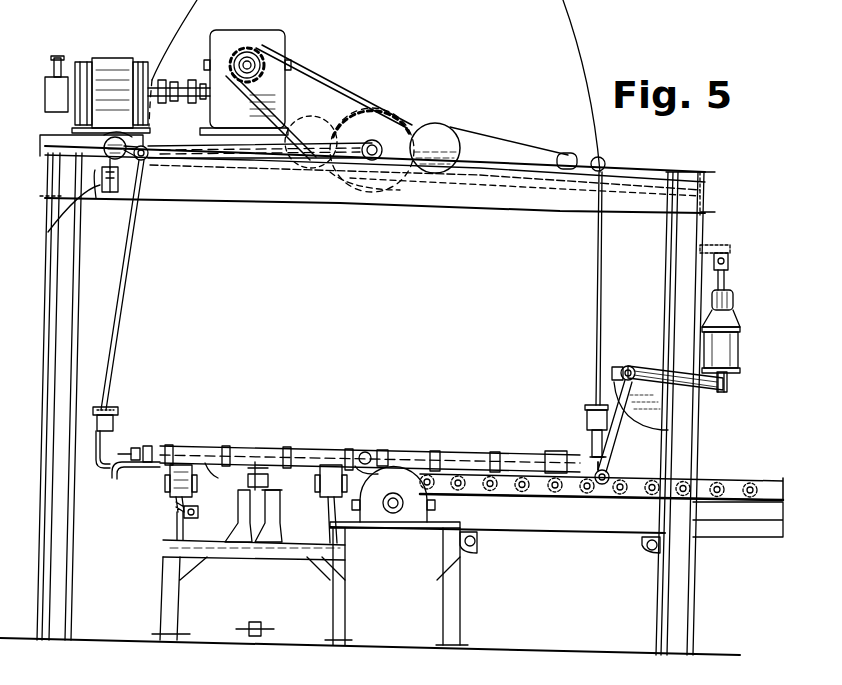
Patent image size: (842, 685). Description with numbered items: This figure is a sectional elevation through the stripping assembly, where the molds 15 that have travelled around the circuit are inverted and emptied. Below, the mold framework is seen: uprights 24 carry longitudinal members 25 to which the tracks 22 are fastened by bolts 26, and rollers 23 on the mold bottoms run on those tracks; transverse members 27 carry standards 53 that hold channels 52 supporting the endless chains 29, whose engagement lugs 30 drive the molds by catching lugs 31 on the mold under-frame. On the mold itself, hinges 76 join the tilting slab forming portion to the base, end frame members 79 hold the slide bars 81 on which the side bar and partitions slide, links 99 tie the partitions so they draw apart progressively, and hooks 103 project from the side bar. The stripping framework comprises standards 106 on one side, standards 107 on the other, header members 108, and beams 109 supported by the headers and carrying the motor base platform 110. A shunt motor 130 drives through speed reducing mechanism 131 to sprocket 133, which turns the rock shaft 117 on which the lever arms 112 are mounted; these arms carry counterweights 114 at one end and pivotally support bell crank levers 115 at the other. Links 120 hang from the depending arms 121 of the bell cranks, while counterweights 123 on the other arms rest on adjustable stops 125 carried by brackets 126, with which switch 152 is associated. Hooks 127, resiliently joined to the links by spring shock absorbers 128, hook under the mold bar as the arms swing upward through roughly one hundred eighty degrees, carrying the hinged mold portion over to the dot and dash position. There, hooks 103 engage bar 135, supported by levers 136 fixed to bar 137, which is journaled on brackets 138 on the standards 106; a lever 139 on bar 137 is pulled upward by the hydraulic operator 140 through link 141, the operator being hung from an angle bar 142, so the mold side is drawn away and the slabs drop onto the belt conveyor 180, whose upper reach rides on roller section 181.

The mold 15 is at (278, 450).
The track means 22 is at (176, 508).
The rollers 23 is at (170, 490).
The uprights 24 is at (342, 612).
The longitudinal members 25 is at (186, 527).
The bolts 26 is at (196, 507).
The transverse members 27 is at (208, 558).
The endless chains 29 is at (258, 490).
The engagement lugs 30 is at (270, 480).
The lugs 31 is at (252, 475).
The channels 52 is at (281, 502).
The standards 53 is at (258, 545).
The hinges 76 is at (376, 450).
The end frame members 79 is at (208, 447).
The slide bars 81 is at (153, 447).
The links 99 is at (508, 448).
The hooks 103 is at (122, 480).
The standards 106 is at (672, 240).
The standards 107 is at (56, 333).
The header members 108 is at (48, 198).
The beams 109 is at (498, 205).
The motor base platform 110 is at (45, 148).
The lever arms 112 is at (248, 168).
The counterweights 114 is at (460, 130).
The bell crank levers 115 is at (103, 145).
The rock shaft 117 is at (405, 190).
The links 120 is at (125, 295).
The depending arms 121 is at (146, 160).
The counterweights 123 is at (118, 158).
The adjustable stops 125 is at (115, 195).
The brackets 126 is at (95, 200).
The hooks 127 is at (98, 470).
The spring shock absorbers 128 is at (118, 414).
The shunt motor 130 is at (112, 58).
The speed reducing mechanism 131 is at (285, 40).
The sprocket 133 is at (385, 110).
The bar 135 is at (612, 478).
The levers 136 is at (618, 437).
The bar 137 is at (626, 366).
The brackets 138 is at (662, 428).
The lever 139 is at (642, 368).
The hydraulic operator 140 is at (734, 348).
The link 141 is at (728, 386).
The angle bar 142 is at (716, 250).
The switch 152 is at (48, 232).
The belt conveyor 180 is at (530, 530).
The roller section 181 is at (708, 505).